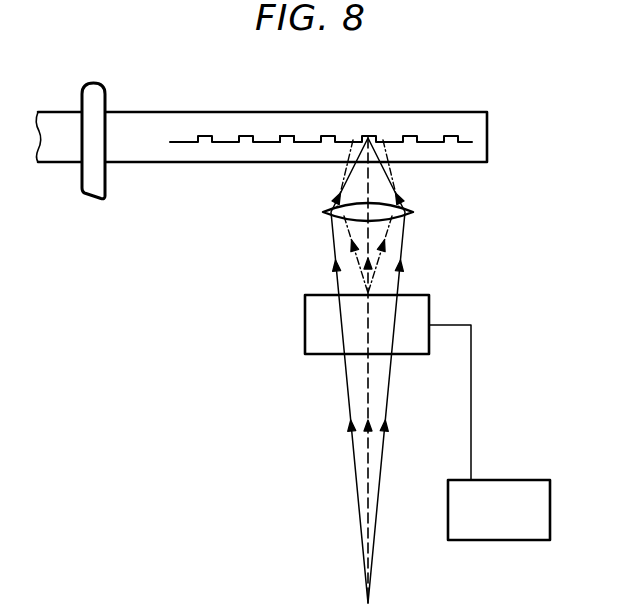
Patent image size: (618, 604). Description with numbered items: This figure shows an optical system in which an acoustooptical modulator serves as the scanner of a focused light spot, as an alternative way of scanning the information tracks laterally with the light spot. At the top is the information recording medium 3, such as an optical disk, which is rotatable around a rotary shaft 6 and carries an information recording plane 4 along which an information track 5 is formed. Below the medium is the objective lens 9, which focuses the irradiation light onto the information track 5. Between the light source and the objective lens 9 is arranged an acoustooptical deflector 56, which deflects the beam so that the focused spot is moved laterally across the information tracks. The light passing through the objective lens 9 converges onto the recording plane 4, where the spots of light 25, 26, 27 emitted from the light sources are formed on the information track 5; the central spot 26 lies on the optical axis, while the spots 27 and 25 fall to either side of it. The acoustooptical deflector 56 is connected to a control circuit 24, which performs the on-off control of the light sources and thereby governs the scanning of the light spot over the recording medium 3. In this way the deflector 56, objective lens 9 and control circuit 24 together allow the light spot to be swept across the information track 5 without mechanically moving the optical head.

The information recording medium 3 is at (146, 112).
The information recording plane 4 is at (221, 143).
The information track 5 is at (283, 136).
The rotary shaft 6 is at (96, 84).
The objective lens 9 is at (410, 212).
The control circuit 24 is at (551, 528).
The light spot 25 is at (380, 140).
The light spot 26 is at (366, 140).
The light spot 27 is at (354, 140).
The acoustooptical deflector 56 is at (430, 306).